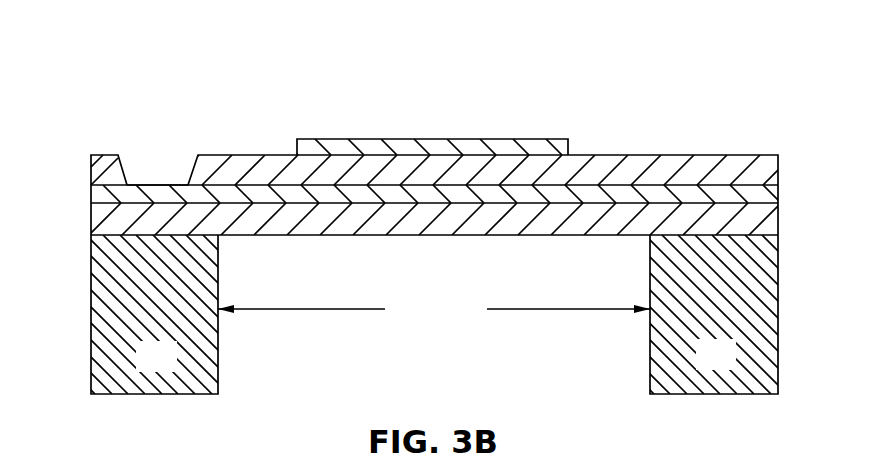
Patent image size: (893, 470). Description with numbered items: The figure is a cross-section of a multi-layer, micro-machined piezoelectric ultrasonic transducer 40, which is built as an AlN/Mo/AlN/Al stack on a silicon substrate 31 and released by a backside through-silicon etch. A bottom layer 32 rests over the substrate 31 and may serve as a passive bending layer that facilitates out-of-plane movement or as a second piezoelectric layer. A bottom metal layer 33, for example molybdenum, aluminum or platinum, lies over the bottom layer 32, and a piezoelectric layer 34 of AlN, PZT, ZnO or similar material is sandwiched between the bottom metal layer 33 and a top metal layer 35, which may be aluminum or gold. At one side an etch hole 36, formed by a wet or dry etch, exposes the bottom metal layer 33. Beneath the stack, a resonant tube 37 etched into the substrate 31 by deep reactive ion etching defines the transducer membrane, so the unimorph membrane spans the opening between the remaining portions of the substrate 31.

The transducer 40 is at (126, 44).
The substrate 31 is at (173, 369).
The bottom layer 32 is at (247, 223).
The bottom metal layer 33 is at (660, 195).
The piezoelectric layer 34 is at (623, 165).
The top metal layer 35 is at (398, 147).
The etch hole 36 is at (158, 166).
The resonant tube 37 is at (451, 384).